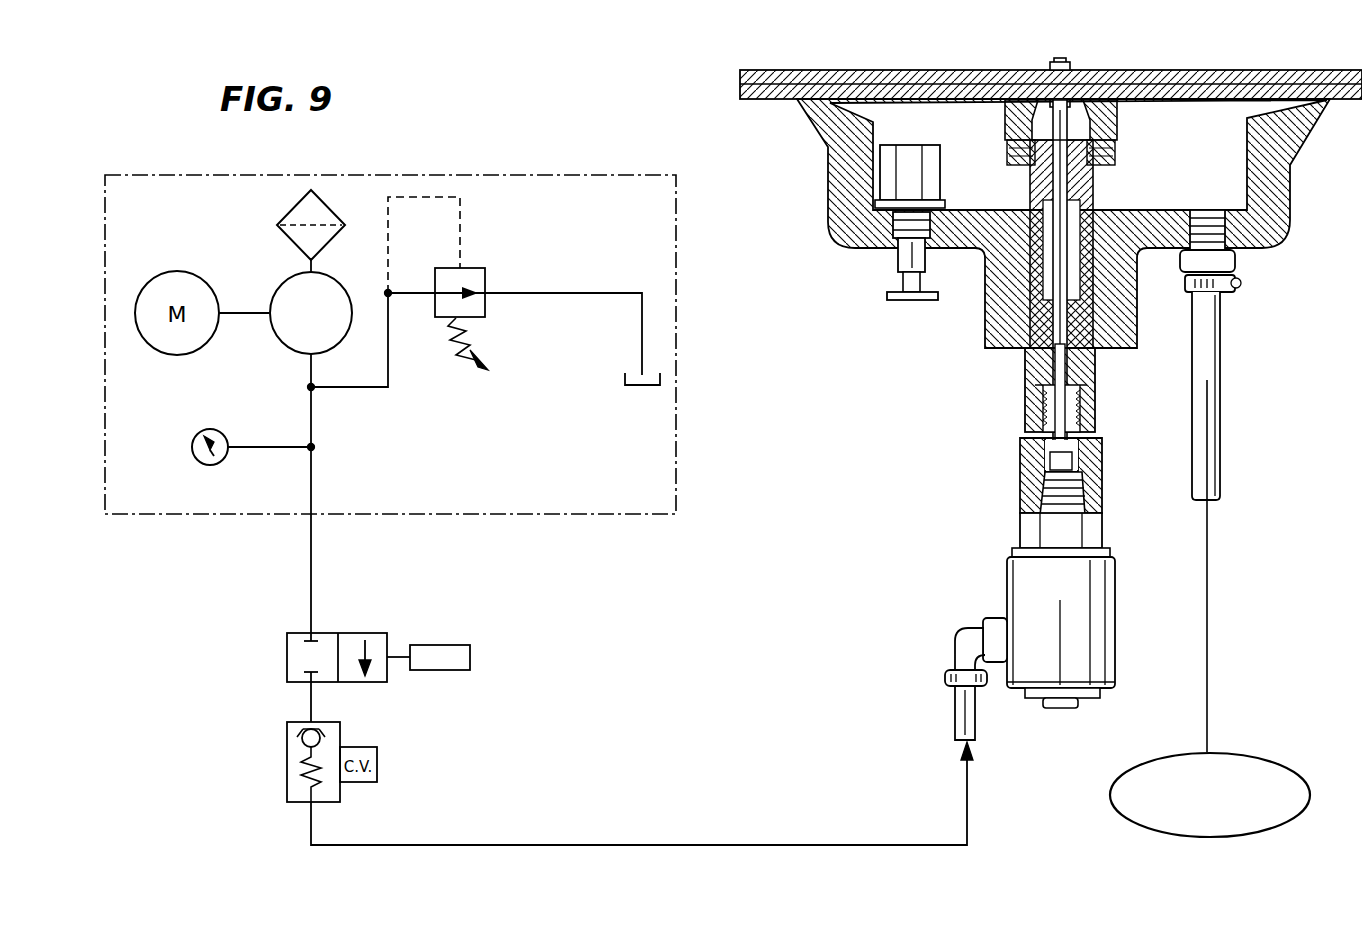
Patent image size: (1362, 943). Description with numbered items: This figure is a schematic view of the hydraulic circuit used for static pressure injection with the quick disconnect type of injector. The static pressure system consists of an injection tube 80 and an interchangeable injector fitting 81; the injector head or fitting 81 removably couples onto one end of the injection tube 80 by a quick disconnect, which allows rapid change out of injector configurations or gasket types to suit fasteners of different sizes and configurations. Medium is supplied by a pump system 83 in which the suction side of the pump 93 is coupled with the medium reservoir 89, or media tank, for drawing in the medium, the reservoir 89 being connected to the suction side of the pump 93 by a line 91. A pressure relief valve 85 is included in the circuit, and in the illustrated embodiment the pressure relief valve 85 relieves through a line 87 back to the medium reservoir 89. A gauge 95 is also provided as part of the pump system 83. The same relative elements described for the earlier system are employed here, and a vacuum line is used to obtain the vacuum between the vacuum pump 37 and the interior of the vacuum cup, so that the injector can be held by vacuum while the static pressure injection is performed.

The vacuum pump 37 is at (1263, 762).
The injection tube 80 is at (1030, 396).
The injector fitting 81 is at (1120, 140).
The pump system 83 is at (472, 514).
The pressure relief valve 85 is at (487, 276).
The line 87 is at (560, 293).
The medium reservoir 89 is at (625, 381).
The line 91 is at (307, 264).
The pump 93 is at (283, 347).
The gauge 95 is at (205, 430).